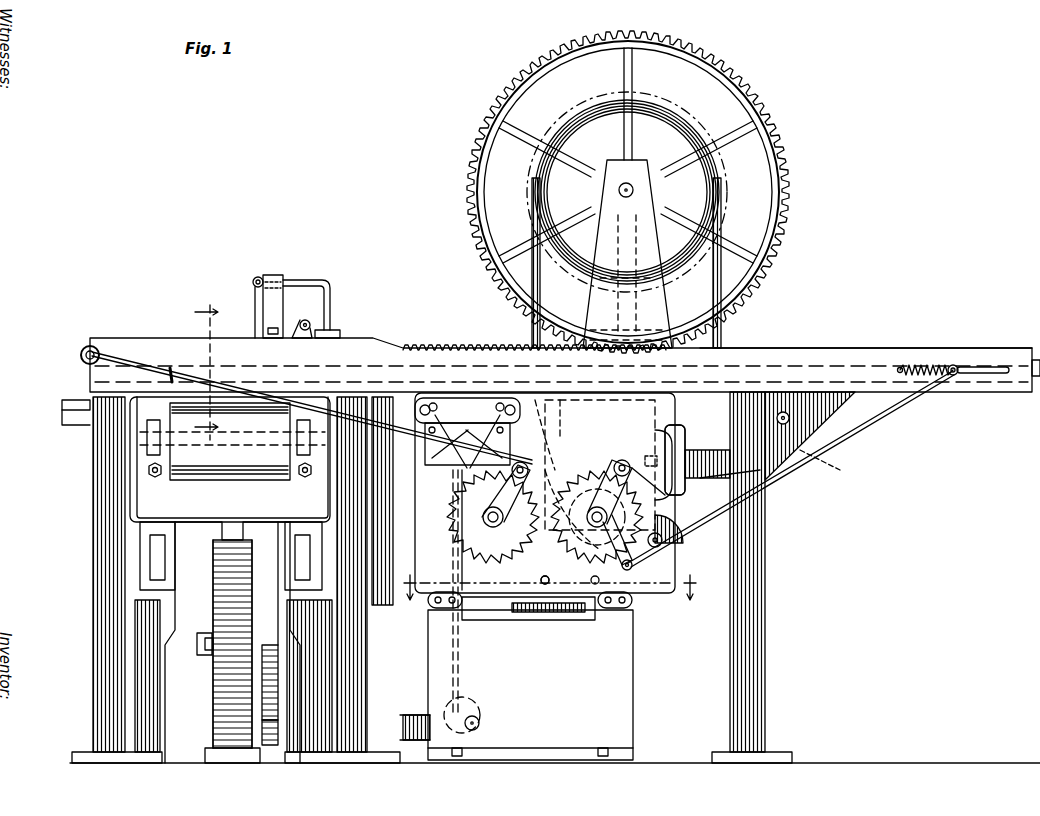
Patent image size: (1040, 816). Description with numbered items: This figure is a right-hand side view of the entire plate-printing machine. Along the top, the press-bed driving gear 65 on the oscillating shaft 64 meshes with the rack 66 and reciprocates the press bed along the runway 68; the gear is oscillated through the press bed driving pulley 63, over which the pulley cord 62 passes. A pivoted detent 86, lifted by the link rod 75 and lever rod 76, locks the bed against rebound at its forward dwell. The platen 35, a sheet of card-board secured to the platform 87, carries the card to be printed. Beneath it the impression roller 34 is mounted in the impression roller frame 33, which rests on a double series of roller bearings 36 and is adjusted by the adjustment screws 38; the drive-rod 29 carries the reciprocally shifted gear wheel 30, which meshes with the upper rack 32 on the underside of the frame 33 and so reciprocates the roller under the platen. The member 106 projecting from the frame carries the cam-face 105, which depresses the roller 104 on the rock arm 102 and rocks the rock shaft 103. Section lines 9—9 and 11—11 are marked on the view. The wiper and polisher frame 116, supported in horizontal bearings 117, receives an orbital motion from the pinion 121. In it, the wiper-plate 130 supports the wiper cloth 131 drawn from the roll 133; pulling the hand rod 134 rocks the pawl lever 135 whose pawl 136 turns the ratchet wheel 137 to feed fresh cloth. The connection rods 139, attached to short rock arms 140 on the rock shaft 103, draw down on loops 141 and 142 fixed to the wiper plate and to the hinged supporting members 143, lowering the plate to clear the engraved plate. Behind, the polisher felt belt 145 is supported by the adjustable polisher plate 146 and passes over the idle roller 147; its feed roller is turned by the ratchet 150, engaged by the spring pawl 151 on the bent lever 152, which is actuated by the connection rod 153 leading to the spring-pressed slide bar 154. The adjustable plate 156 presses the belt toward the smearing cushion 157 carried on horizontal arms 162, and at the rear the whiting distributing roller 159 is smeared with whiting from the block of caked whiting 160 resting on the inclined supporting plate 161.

The press-bed driving gear 65 is at (530, 60).
The press bed driving pulley 63 is at (595, 118).
The oscillating shaft 64 is at (634, 190).
The rod 62 is at (541, 296).
The rack 66 is at (440, 345).
The lever rod 76 is at (283, 275).
The link rod 75 is at (256, 287).
The pivoted detent 86 is at (303, 330).
The section line 9— 9 is at (206, 365).
The hand rod 134 is at (83, 360).
The platen 35 is at (60, 404).
The platform 87 is at (70, 412).
The impression roller 34 is at (230, 441).
The adjustment screws 38 is at (155, 478).
The impression roller frame 33 is at (202, 510).
The upper rack 32 is at (243, 522).
The roller bearings 36 is at (166, 555).
The reciprocally shifted gear wheel 30 is at (222, 578).
The cam-face 105 is at (222, 690).
The member 106 is at (277, 612).
The drive-rod 29 is at (205, 656).
The roller 104 is at (270, 746).
The wiper-plate 130 is at (467, 410).
The loop 141 is at (433, 403).
The wiper cloth 131 is at (500, 403).
The hinged supporting members 143 is at (467, 444).
The loops 142 is at (455, 468).
The pawl 136 is at (496, 478).
The ratchet wheel 137 is at (462, 530).
The connection rods 139 is at (465, 570).
The wiper and polisher frame 116 is at (556, 574).
The section line 11— 11 is at (556, 587).
The horizontal bearings 117 is at (435, 610).
The pinion 121 is at (548, 614).
The rock arm 102 is at (418, 715).
The short rock arms 140 is at (465, 700).
The rock shaft 103 is at (480, 723).
The polisher felt belt 145 is at (585, 400).
The adjustable polisher plate 146 is at (584, 420).
The idle roller 147 is at (556, 435).
The pawl lever 135 is at (545, 475).
The spring pawl 151 is at (612, 500).
The adjustable plate 156 is at (648, 460).
The smearing cushion 157 is at (686, 450).
The bent lever 152 is at (645, 488).
The ratchet 150 is at (575, 540).
The roll 133 is at (675, 543).
The table bar 68 is at (892, 346).
The spring-pressed slide bar 154 is at (957, 348).
The connection rod 153 is at (868, 425).
The block of caked whiting 160 is at (838, 410).
The inclined supporting plate 161 is at (850, 435).
The whiting distributing roller 159 is at (822, 458).
The horizontal arms 162 is at (765, 487).